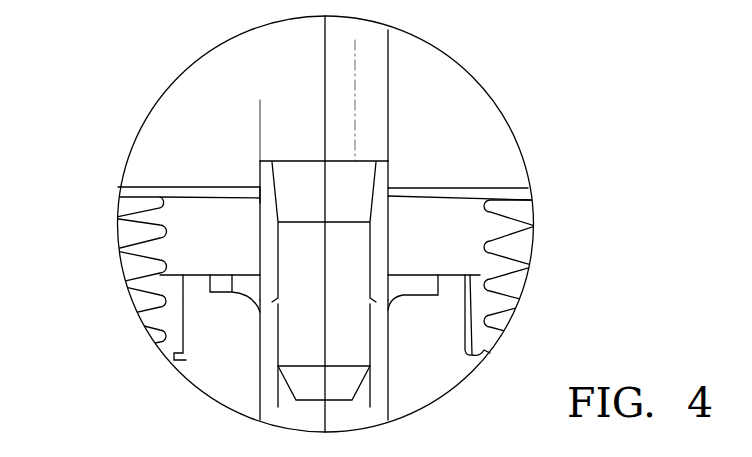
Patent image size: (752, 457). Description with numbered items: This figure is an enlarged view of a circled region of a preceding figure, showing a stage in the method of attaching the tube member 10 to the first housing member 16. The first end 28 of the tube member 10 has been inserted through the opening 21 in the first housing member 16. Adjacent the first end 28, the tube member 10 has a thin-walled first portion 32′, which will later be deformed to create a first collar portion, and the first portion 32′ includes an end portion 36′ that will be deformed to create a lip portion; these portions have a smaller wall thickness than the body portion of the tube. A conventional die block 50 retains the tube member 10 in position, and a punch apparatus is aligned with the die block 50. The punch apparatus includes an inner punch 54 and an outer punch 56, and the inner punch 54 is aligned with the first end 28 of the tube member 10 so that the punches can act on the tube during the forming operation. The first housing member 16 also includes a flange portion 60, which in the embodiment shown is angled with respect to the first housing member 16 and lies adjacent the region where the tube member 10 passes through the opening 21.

The tube member 10 is at (390, 380).
The first housing member 16 is at (505, 183).
The opening 21 is at (390, 205).
The first end 28 is at (389, 157).
The first portion 32′ is at (260, 250).
The end portion 36′ is at (260, 175).
The die block 50 is at (200, 372).
The inner punch 54 is at (362, 75).
The outer punch 56 is at (209, 96).
The flange portion 60 is at (238, 197).